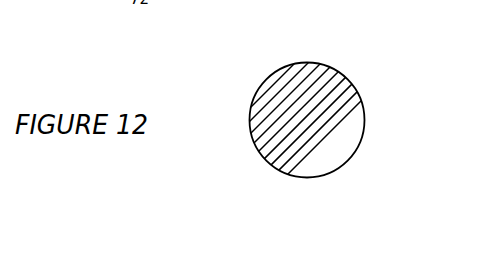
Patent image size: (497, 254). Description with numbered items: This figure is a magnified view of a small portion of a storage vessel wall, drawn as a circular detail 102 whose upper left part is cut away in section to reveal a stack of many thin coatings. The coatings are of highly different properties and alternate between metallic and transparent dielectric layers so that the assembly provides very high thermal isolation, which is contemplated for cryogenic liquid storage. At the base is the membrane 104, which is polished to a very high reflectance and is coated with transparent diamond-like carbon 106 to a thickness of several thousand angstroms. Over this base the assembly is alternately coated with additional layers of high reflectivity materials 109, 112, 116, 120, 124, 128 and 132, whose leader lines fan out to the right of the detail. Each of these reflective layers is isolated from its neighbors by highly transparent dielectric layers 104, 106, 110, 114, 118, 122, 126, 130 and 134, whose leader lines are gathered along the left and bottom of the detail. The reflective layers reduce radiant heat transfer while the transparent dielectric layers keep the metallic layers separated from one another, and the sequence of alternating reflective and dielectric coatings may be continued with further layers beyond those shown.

The cross-section of fiber/filament 102 is at (306, 62).
The membrane 104 is at (257, 108).
The transparent diamond-like carbon 106 is at (250, 128).
The high reflectivity material layer 109 is at (326, 65).
The transparent dielectric layer 110 is at (249, 131).
The high reflectivity material layer 112 is at (337, 68).
The transparent dielectric layer 114 is at (255, 144).
The high reflectivity material layer 116 is at (343, 73).
The transparent dielectric layer 118 is at (260, 156).
The high reflectivity material layer 120 is at (352, 83).
The transparent dielectric layer 122 is at (266, 160).
The high reflectivity material layer 124 is at (357, 86).
The transparent dielectric layer 126 is at (272, 167).
The high reflectivity material layer 128 is at (360, 95).
The transparent dielectric layer 130 is at (277, 170).
The high reflectivity material layer 132 is at (363, 103).
The transparent dielectric layer 134 is at (284, 176).